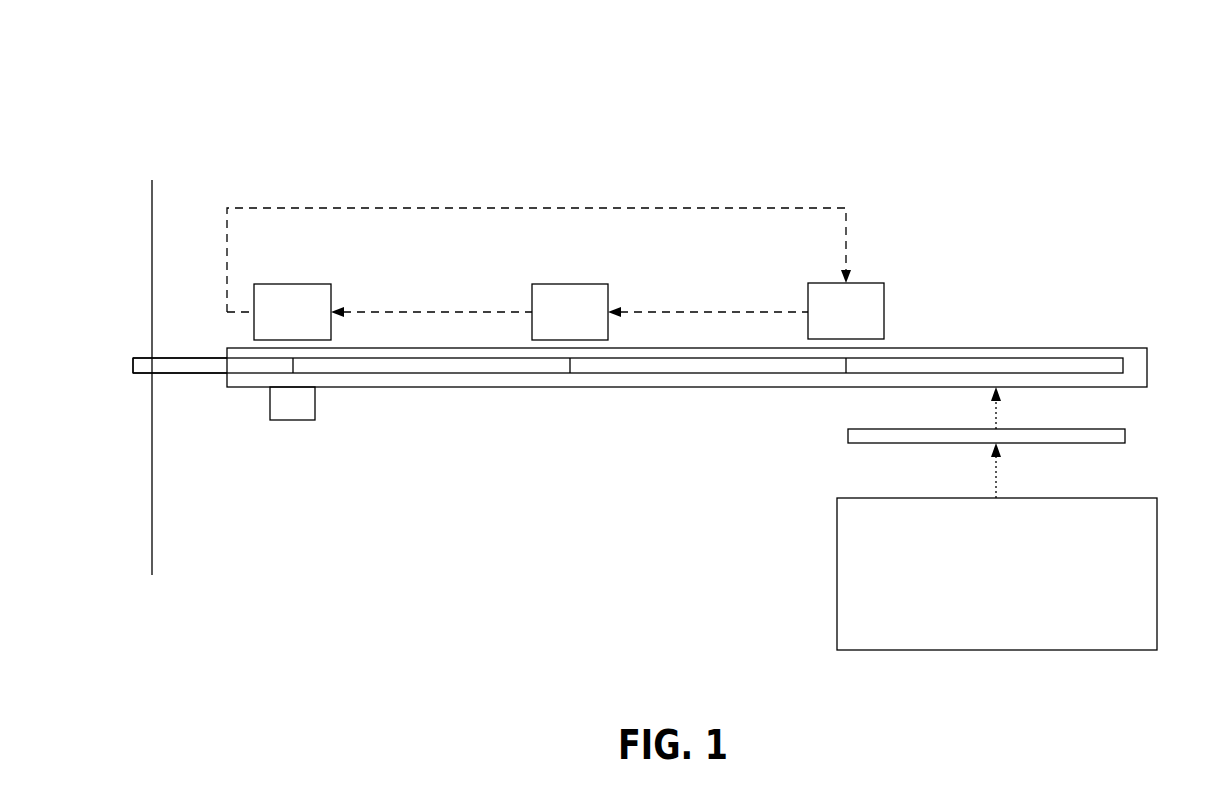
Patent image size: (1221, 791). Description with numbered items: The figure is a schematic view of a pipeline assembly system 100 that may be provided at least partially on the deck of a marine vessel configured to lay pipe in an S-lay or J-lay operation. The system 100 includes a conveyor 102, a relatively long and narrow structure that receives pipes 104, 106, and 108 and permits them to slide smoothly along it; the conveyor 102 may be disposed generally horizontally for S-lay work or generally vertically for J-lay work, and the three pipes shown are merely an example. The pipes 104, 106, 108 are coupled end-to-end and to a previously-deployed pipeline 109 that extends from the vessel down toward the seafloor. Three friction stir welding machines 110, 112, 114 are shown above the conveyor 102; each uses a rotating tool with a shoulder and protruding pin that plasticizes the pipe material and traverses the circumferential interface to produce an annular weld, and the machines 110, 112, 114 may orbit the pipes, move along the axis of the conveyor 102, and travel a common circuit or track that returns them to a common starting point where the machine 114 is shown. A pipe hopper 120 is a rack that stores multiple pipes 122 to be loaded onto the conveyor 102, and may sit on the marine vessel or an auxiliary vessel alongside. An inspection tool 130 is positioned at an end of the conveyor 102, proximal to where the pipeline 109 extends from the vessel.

The pipeline assembly system 100 is at (148, 138).
The conveyor 102 is at (1077, 347).
The pipe 104 is at (967, 358).
The pipe 106 is at (600, 373).
The pipe 108 is at (340, 373).
The previously-deployed pipeline 109 is at (133, 360).
The friction stir welding machine 110 is at (539, 274).
The friction stir welding machine 112 is at (469, 312).
The friction stir welding machine 114 is at (746, 311).
The pipe hopper 120 is at (997, 546).
The pipes 122 is at (848, 435).
The inspection tool 130 is at (292, 420).